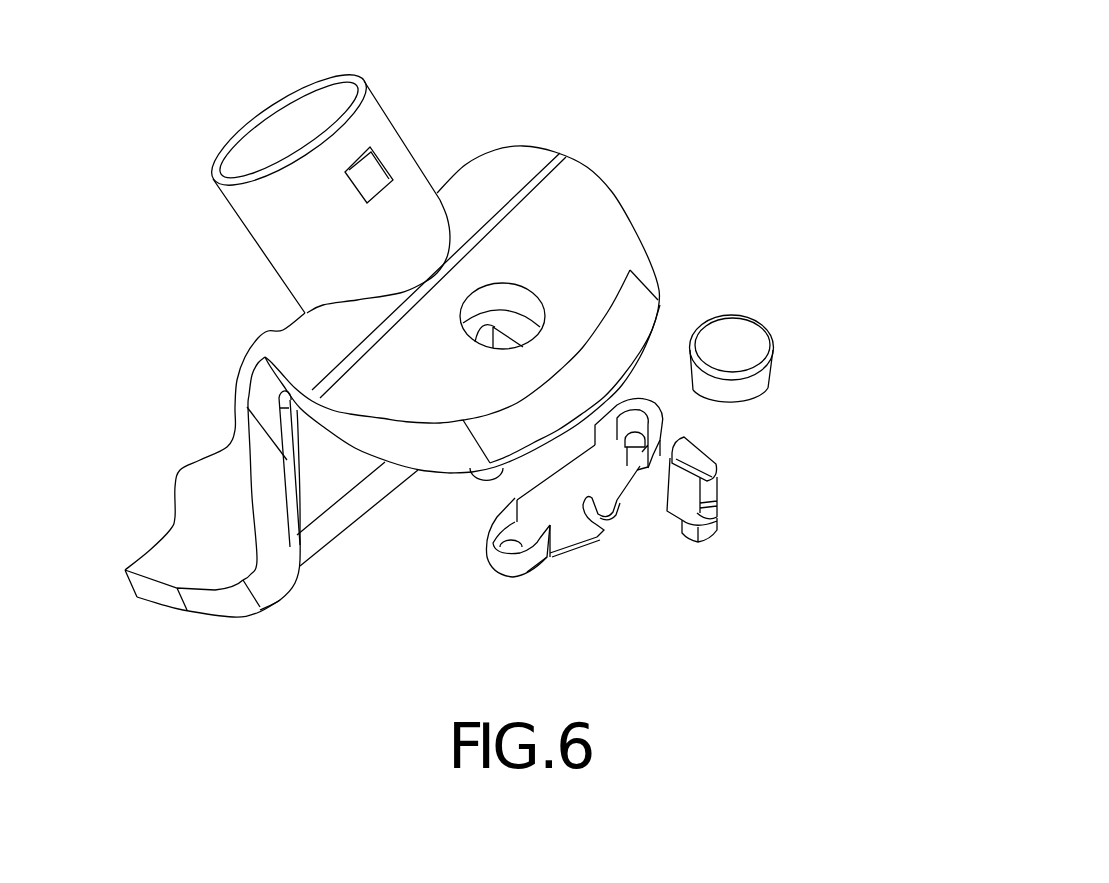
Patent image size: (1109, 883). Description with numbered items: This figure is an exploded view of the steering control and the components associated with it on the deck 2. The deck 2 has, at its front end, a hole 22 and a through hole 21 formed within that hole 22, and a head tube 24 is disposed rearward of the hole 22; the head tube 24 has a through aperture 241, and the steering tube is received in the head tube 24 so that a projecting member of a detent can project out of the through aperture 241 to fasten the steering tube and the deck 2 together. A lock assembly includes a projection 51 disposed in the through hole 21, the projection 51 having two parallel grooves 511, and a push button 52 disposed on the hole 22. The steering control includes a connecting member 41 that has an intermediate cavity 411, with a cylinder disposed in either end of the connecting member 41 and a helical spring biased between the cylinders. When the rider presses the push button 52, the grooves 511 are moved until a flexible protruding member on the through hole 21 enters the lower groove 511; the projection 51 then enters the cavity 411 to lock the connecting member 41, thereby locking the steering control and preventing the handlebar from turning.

The deck 2 is at (508, 180).
The through hole 21 is at (497, 327).
The hole 22 is at (541, 323).
The head tube 24 is at (363, 117).
The through aperture 241 is at (385, 165).
The connecting member 41 is at (568, 532).
The intermediate cavity 411 is at (630, 558).
The projection 51 is at (703, 462).
The parallel grooves 511 is at (722, 522).
The push button 52 is at (737, 353).